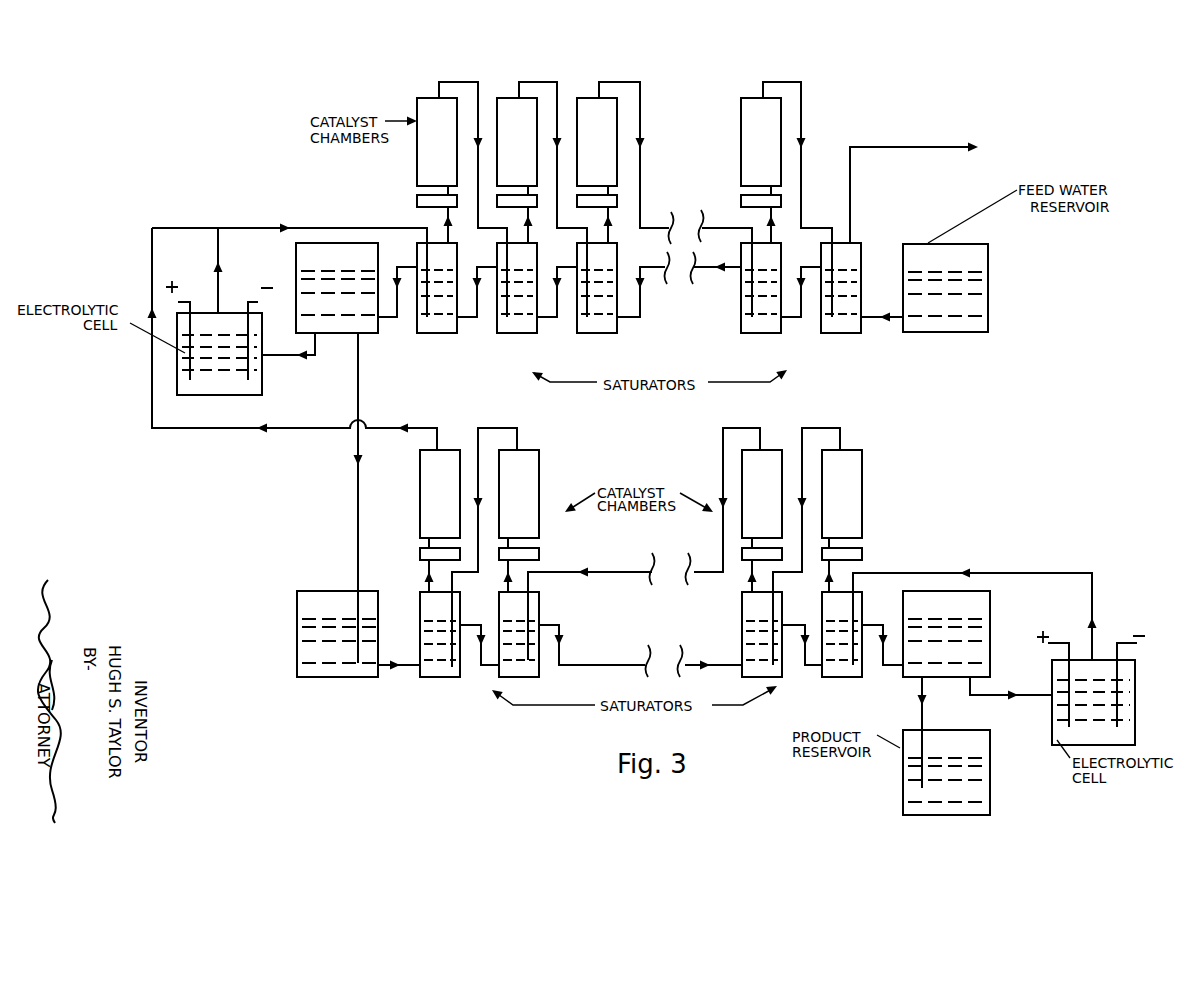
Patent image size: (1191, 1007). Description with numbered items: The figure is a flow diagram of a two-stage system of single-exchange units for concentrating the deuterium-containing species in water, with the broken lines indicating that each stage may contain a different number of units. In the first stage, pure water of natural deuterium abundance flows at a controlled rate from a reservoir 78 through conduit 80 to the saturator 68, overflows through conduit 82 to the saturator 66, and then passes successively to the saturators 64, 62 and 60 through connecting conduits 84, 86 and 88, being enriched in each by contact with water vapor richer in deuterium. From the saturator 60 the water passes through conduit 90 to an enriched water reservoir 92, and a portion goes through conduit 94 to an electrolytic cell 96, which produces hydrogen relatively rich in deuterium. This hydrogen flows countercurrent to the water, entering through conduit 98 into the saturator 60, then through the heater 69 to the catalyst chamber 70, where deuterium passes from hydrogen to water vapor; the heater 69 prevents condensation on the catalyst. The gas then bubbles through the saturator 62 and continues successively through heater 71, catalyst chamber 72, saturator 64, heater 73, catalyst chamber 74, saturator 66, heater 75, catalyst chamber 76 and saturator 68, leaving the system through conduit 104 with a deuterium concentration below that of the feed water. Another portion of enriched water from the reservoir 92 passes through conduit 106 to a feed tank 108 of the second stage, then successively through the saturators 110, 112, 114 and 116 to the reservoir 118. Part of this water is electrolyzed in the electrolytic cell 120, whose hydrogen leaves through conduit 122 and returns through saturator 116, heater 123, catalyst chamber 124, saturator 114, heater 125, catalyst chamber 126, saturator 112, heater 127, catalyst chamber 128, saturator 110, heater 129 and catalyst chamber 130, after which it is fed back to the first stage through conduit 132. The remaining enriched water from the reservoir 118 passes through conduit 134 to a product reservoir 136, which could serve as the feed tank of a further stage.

The saturating chamber 60 is at (433, 333).
The saturating chamber 62 is at (513, 333).
The saturating chamber 64 is at (600, 333).
The saturating chamber 66 is at (758, 333).
The saturating chamber 68 is at (838, 333).
The heater 69 is at (433, 198).
The catalyst chamber 70 is at (432, 98).
The heater 71 is at (513, 198).
The catalyst chamber 72 is at (512, 98).
The heater 73 is at (593, 198).
The catalyst chamber 74 is at (590, 98).
The heater 75 is at (757, 198).
The catalyst chamber 76 is at (755, 98).
The reservoir 78 is at (977, 293).
The conduit 80 is at (876, 323).
The conduit 82 is at (795, 323).
The connecting conduit 84 is at (636, 323).
The connecting conduit 86 is at (555, 323).
The connecting conduit 88 is at (470, 323).
The conduit 90 is at (387, 320).
The enriched water reservoir 92 is at (313, 278).
The conduit 94 is at (275, 357).
The electrolytic cell 96 is at (195, 388).
The conduit 98 is at (352, 227).
The conduit 104 is at (878, 146).
The conduit 106 is at (357, 510).
The feed tank 108 is at (317, 645).
The saturator 110 is at (448, 673).
The saturator 112 is at (510, 672).
The saturator 114 is at (757, 673).
The saturator 116 is at (850, 673).
The reservoir 118 is at (983, 645).
The electrolytic cell 120 is at (1105, 695).
The conduit 122 is at (1023, 571).
The heater 123 is at (860, 553).
The catalyst chamber 124 is at (850, 487).
The heater 125 is at (743, 552).
The catalyst chamber 126 is at (750, 482).
The heater 127 is at (540, 552).
The catalyst chamber 128 is at (530, 488).
The heater 129 is at (420, 553).
The catalyst chamber 130 is at (430, 488).
The conduit 132 is at (152, 383).
The conduit 134 is at (925, 715).
The product reservoir 136 is at (968, 787).